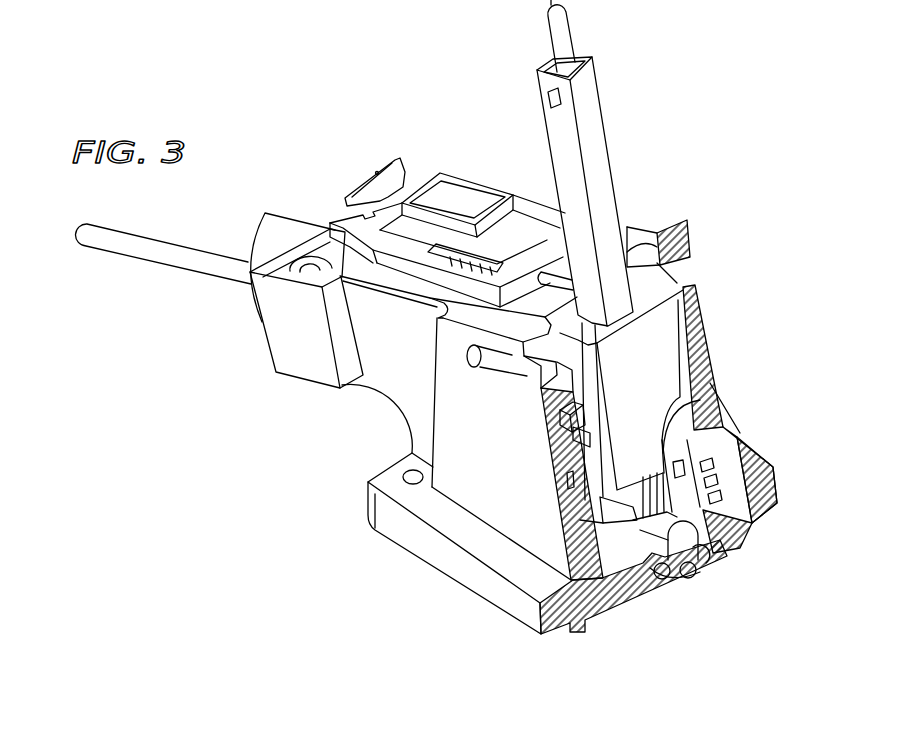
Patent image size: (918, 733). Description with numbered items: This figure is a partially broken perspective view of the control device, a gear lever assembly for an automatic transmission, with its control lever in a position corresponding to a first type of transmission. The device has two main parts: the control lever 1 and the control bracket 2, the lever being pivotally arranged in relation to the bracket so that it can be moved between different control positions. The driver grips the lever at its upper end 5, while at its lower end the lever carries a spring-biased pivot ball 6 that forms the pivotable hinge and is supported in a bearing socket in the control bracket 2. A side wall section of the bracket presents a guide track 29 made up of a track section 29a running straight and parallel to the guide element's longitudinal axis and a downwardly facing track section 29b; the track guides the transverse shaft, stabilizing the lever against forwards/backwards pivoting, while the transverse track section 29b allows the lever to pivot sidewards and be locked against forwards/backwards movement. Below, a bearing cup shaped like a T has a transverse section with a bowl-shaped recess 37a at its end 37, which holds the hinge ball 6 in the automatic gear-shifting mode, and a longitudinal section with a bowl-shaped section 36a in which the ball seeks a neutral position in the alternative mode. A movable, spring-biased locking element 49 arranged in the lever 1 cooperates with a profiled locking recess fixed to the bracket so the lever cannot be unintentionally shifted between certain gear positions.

The control lever 1 is at (612, 130).
The control bracket 2 is at (400, 413).
The upper end of the control lever 5 is at (548, 14).
The pivot ball 6 is at (753, 523).
The guide track 29 is at (511, 366).
The track section 29a is at (480, 366).
The track section 29b is at (538, 385).
The bowl-shaped section 36a is at (700, 543).
The end of the transverse section 37 is at (667, 580).
The bowl-shaped recess 37a is at (690, 557).
The locking element 49 is at (538, 418).